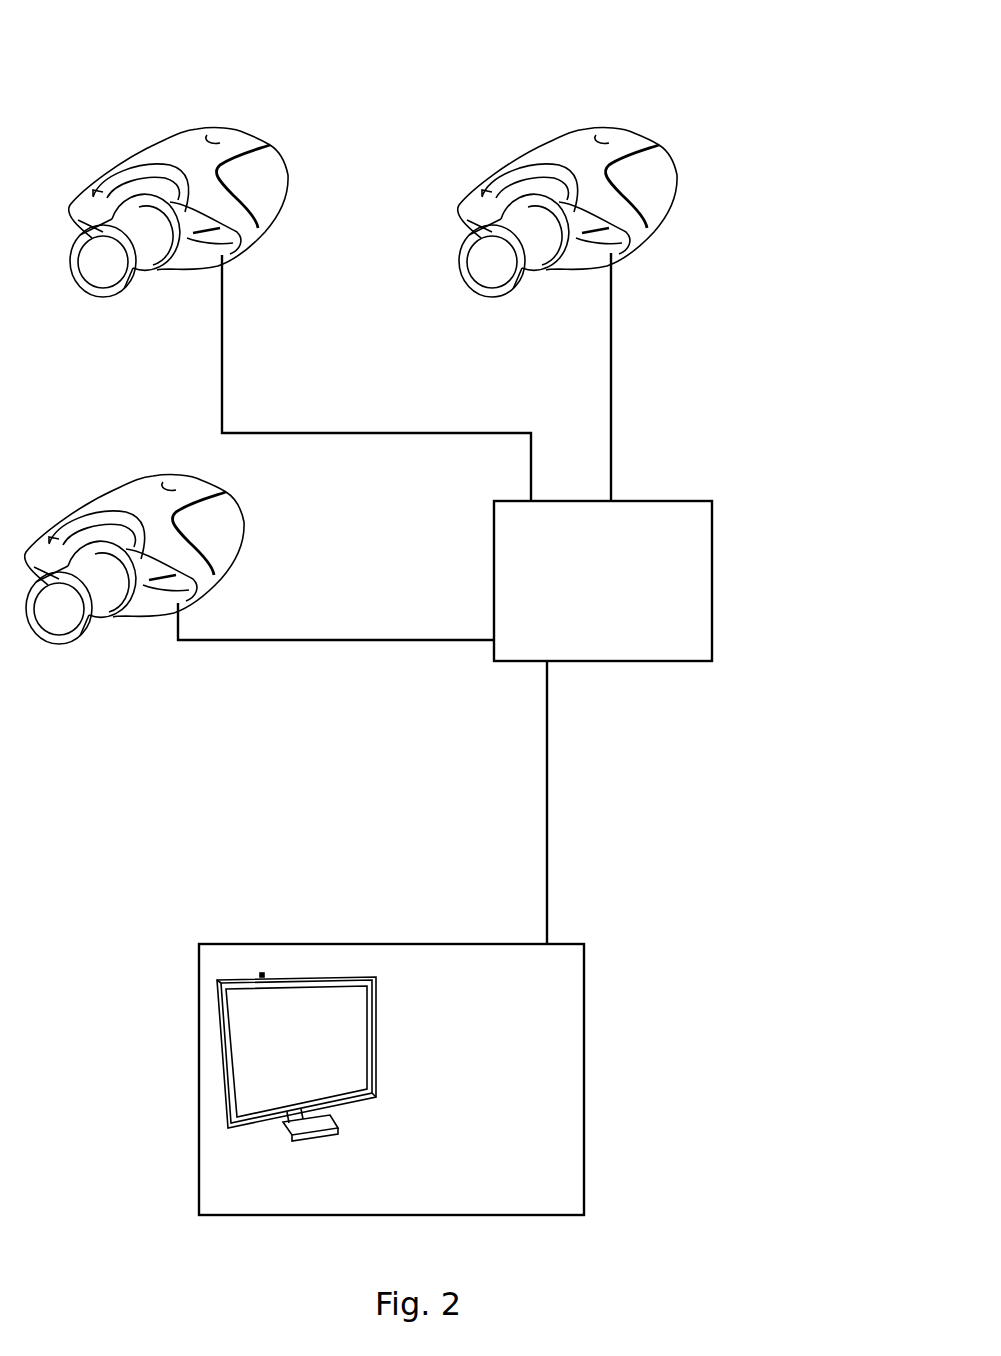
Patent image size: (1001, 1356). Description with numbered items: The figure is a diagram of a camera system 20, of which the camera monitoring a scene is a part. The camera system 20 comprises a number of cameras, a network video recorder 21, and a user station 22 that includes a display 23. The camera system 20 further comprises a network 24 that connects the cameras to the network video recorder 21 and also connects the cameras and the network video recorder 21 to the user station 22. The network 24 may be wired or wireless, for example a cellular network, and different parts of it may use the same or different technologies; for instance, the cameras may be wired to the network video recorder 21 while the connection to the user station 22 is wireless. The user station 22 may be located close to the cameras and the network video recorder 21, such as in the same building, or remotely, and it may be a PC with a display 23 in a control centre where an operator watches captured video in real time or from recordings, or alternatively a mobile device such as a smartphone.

The camera system 20 is at (90, 88).
The network video recorder 21 is at (712, 560).
The user station 22 is at (584, 996).
The display 23 is at (217, 1035).
The network 24 is at (222, 702).